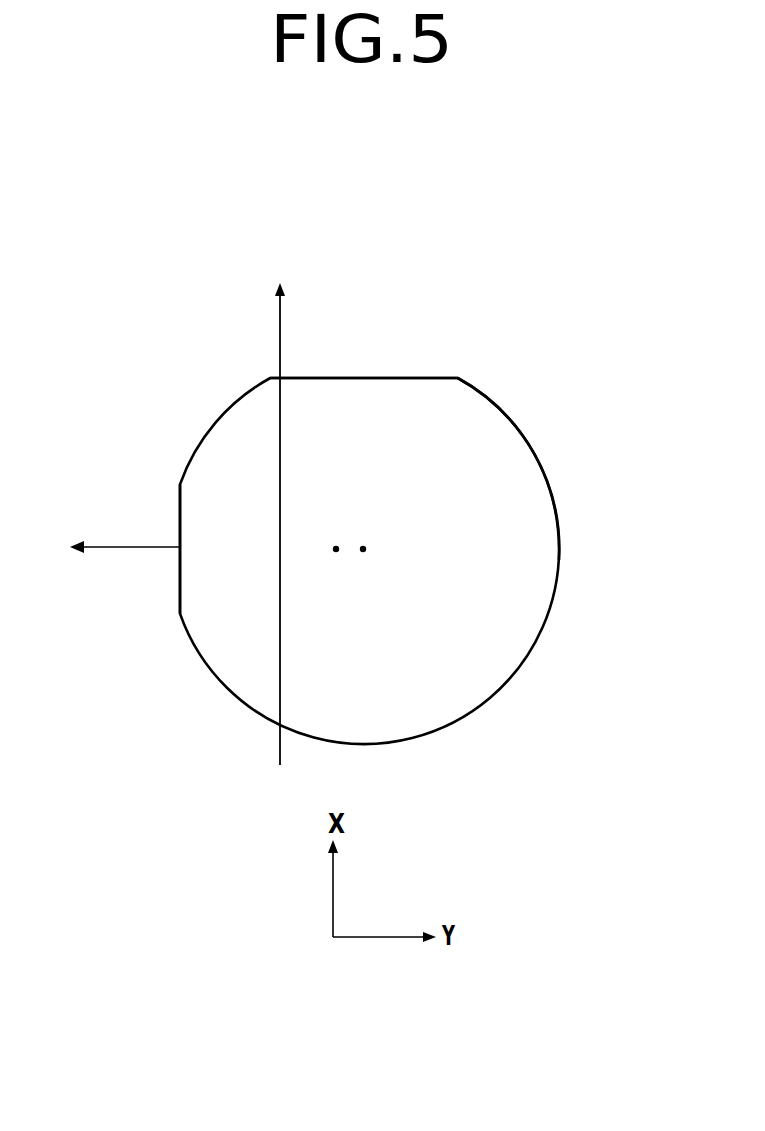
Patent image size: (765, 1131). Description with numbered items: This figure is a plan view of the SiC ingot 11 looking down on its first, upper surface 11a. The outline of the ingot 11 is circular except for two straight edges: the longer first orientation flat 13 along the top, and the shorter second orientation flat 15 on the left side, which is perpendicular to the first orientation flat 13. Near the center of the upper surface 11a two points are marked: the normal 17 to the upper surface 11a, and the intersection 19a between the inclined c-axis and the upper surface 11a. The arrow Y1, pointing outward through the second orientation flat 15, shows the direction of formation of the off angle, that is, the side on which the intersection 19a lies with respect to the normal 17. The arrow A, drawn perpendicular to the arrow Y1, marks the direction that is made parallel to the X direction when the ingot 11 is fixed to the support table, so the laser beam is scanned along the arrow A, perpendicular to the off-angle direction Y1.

The SiC ingot 11 is at (540, 440).
The first surface 11a is at (530, 568).
The first orientation flat 13 is at (357, 378).
The second orientation flat 15 is at (180, 507).
The normal 17 is at (365, 546).
The intersection 19a is at (334, 546).
The arrow A is at (283, 640).
The arrow Y1 is at (128, 549).